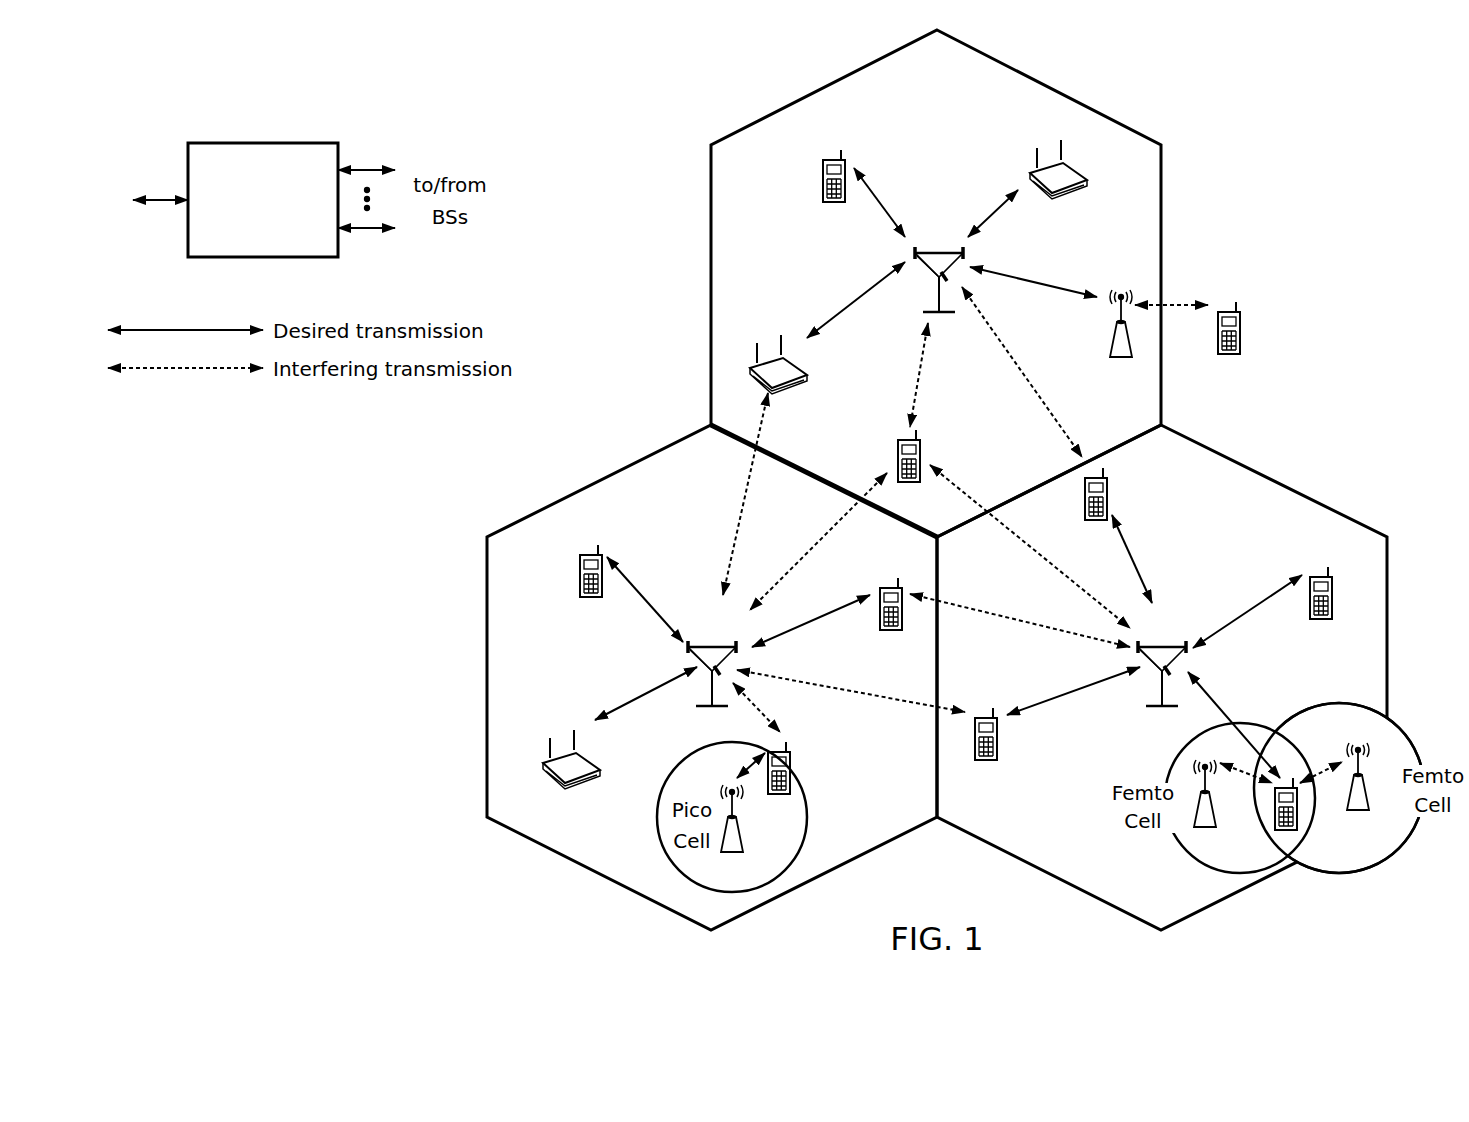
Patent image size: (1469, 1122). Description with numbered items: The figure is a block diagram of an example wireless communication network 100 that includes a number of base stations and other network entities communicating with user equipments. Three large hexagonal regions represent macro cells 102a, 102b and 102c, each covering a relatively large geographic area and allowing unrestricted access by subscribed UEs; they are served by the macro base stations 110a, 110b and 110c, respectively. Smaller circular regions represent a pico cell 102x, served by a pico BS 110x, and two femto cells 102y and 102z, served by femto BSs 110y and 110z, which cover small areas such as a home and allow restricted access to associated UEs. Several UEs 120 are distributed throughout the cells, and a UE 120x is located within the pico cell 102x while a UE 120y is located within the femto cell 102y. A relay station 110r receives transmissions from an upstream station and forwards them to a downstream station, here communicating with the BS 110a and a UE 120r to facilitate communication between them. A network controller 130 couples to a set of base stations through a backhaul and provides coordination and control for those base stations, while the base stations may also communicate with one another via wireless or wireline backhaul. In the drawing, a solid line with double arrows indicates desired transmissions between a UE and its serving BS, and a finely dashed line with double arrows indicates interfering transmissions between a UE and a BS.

The wireless communication network 100 is at (1318, 104).
The macro cell 102a is at (1046, 86).
The macro cell 102b is at (610, 476).
The macro cell 102c is at (1266, 478).
The pico cell 102x is at (684, 758).
The femto cell 102y is at (1168, 768).
The femto cell 102z is at (1333, 705).
The macro base station 110a is at (936, 252).
The macro base station 110b is at (712, 646).
The macro base station 110c is at (1164, 646).
The relay station 110r is at (1112, 342).
The pico base station 110x is at (743, 850).
The femto base station 110y is at (1216, 822).
The femto base station 110z is at (1367, 808).
The user equipment 120 is at (822, 170).
The user equipment 120r is at (1238, 340).
The user equipment 120x is at (789, 766).
The user equipment 120y is at (1275, 822).
The network controller 130 is at (258, 143).